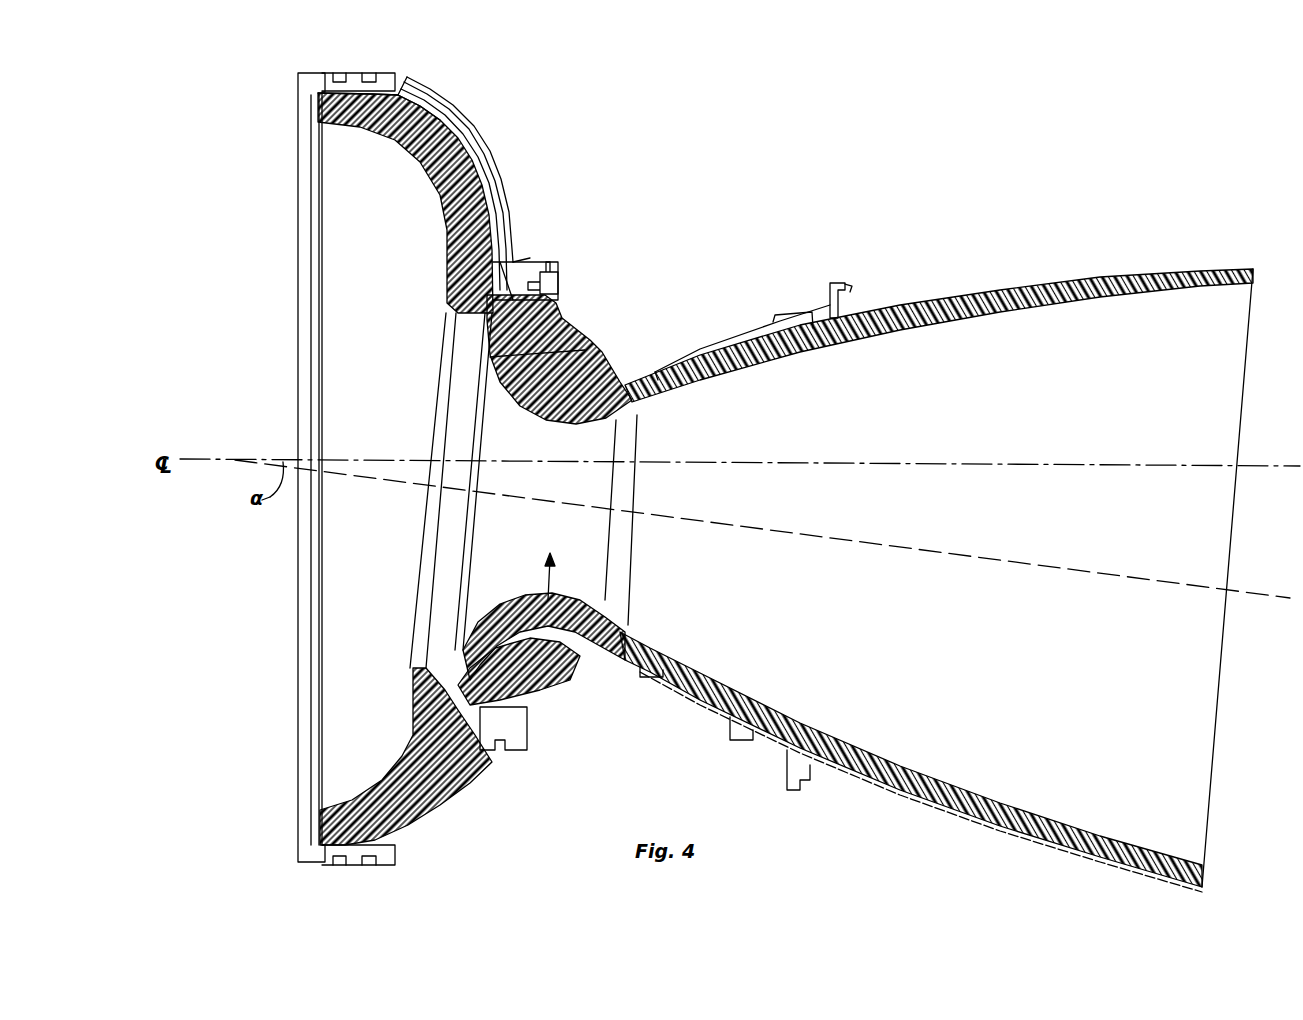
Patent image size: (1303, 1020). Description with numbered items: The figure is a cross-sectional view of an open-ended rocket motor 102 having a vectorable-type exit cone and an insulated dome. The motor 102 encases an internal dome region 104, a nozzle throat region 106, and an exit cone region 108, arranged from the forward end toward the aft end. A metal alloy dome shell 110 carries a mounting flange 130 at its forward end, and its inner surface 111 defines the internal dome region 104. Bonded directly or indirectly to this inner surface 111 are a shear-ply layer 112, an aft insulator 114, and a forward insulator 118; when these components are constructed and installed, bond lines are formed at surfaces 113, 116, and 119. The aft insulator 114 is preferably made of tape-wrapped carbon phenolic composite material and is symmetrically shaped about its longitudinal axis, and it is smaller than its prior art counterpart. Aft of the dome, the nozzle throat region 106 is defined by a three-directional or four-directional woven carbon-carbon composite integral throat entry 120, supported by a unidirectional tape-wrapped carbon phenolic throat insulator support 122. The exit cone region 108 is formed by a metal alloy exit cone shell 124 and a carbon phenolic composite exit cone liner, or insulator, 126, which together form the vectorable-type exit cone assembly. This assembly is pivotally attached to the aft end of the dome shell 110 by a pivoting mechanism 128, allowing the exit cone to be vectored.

The motor 102 is at (758, 180).
The internal dome region 104 is at (344, 641).
The nozzle throat region 106 is at (547, 620).
The exit cone region 108 is at (972, 757).
The dome shell 110 is at (480, 190).
The inner surface 111 is at (407, 100).
The shear-ply layer 112 is at (537, 232).
The bond line surface 113 is at (487, 210).
The aft insulator 114 is at (507, 250).
The bond line surface 116 is at (405, 720).
The forward insulator 118 is at (425, 152).
The bond line surface 119 is at (440, 220).
The integral throat entry 120 is at (580, 385).
The throat insulator support 122 is at (630, 392).
The exit cone shell 124 is at (745, 345).
The exit cone liner 126 is at (1050, 295).
The pivoting mechanism 128 is at (540, 238).
The mounting flange 130 is at (303, 74).